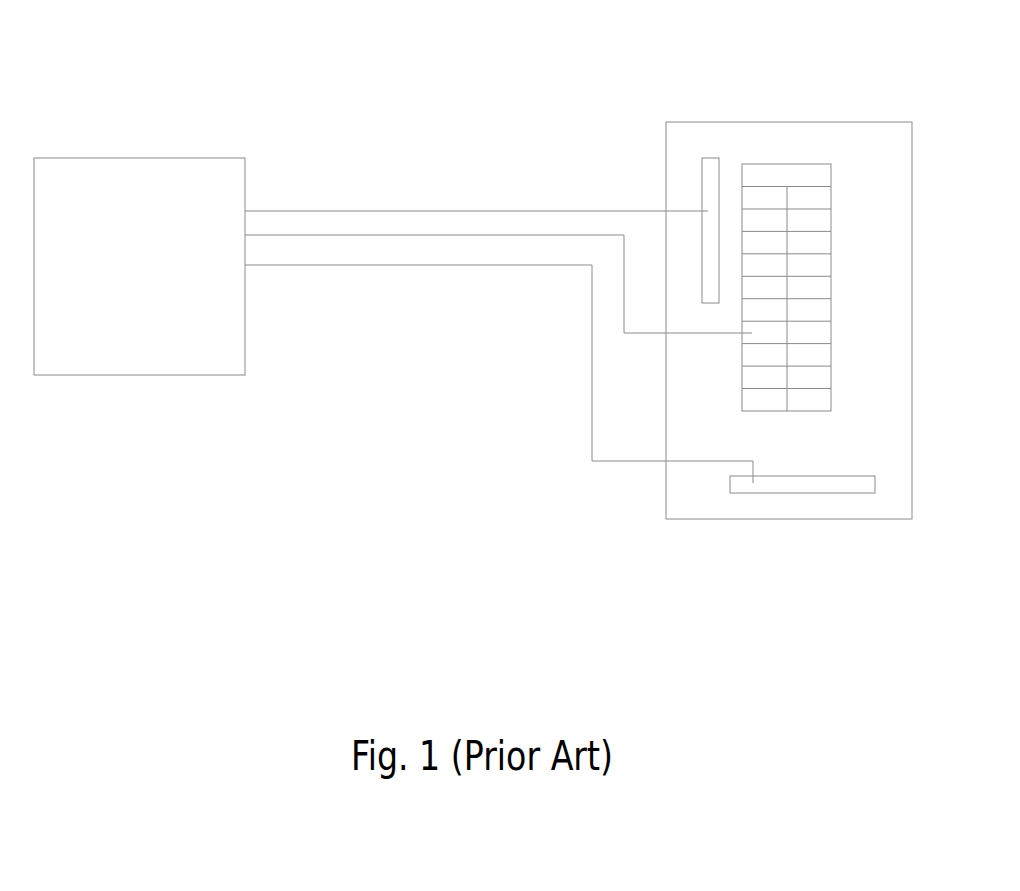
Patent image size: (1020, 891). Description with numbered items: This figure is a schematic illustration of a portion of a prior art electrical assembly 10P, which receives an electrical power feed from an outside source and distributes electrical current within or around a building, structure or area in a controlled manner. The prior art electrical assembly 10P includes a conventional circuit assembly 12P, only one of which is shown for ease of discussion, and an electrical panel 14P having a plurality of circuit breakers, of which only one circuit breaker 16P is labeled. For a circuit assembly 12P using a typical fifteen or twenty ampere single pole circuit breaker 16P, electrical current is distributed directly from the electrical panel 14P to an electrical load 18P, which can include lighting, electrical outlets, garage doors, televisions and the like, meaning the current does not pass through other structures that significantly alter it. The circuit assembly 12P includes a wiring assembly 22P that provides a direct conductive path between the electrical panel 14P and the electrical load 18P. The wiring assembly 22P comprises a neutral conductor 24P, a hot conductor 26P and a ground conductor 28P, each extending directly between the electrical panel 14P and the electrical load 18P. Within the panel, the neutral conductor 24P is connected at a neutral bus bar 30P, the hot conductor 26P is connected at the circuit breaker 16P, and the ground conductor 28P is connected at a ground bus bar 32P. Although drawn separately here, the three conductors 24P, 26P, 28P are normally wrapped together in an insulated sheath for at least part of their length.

The prior art electrical assembly 10P is at (506, 134).
The circuit assembly 12P is at (363, 375).
The electrical panel 14P is at (695, 503).
The circuit breaker 16P is at (763, 335).
The electrical load 18P is at (150, 178).
The wiring assembly 22P is at (420, 103).
The neutral conductor 24P is at (296, 210).
The hot conductor 26P is at (342, 235).
The ground conductor 28P is at (385, 265).
The neutral bus bar 30P is at (710, 171).
The ground bus bar 32P is at (813, 488).